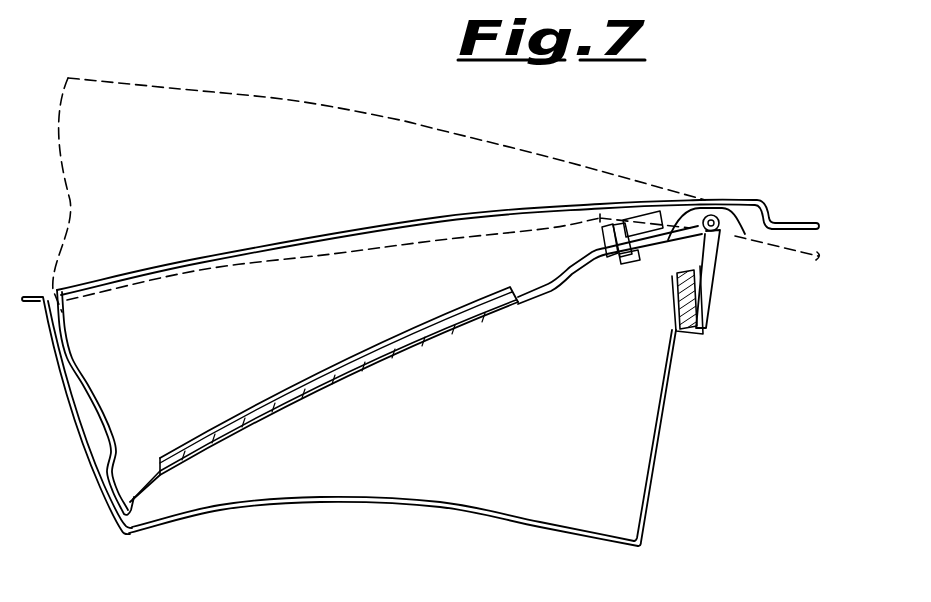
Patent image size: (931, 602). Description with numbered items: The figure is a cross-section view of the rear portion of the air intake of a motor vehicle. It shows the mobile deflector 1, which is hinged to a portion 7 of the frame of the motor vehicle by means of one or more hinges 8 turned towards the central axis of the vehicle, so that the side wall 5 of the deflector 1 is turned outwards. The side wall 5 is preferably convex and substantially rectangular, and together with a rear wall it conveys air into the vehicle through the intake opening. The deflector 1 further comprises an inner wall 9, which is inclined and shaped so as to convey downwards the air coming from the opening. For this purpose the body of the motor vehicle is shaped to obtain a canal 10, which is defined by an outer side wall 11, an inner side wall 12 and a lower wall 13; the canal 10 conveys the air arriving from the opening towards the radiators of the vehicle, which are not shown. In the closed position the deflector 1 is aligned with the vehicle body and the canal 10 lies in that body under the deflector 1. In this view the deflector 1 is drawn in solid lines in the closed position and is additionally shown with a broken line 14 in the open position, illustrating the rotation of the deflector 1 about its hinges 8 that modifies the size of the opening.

The deflector 1 is at (283, 238).
The side wall 5 is at (72, 358).
The portion of the frame 7 is at (686, 340).
The hinge 8 is at (713, 262).
The inner wall 9 is at (530, 303).
The canal 10 is at (492, 448).
The outer side wall 11 is at (72, 424).
The inner side wall 12 is at (660, 447).
The lower wall 13 is at (352, 506).
The broken line 14 is at (341, 107).